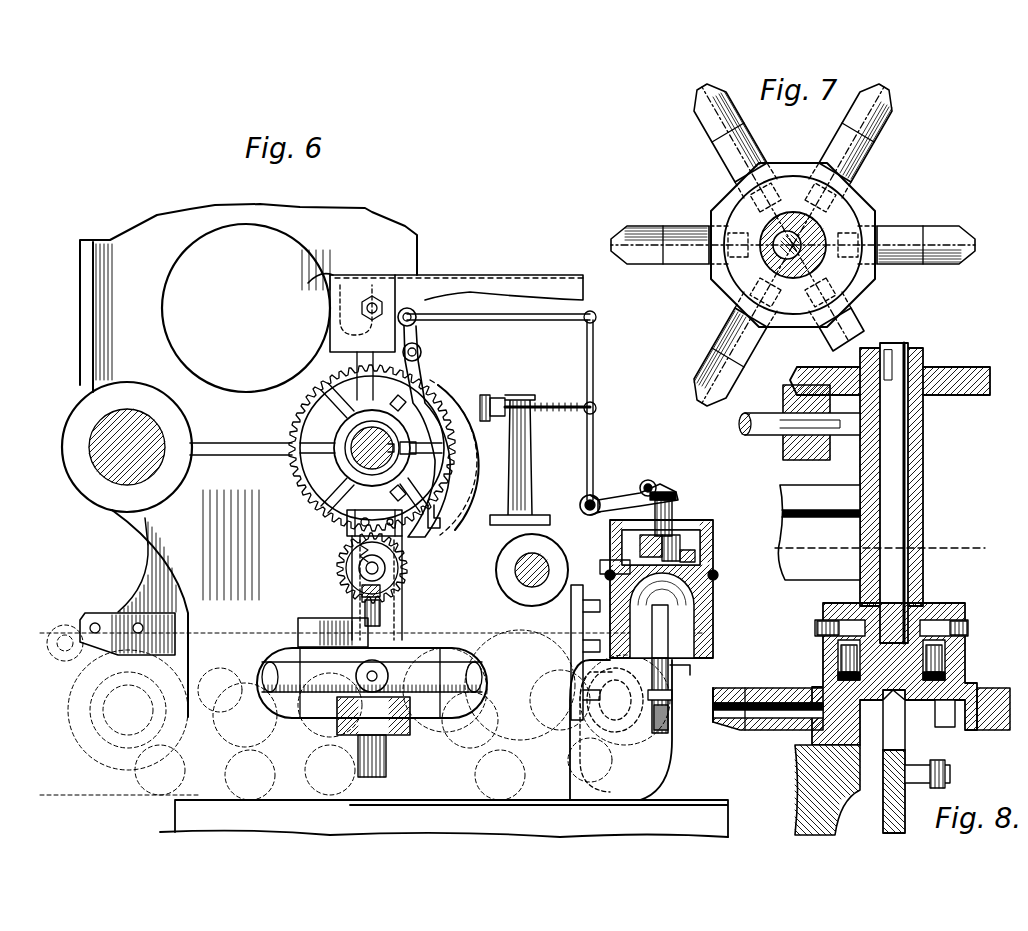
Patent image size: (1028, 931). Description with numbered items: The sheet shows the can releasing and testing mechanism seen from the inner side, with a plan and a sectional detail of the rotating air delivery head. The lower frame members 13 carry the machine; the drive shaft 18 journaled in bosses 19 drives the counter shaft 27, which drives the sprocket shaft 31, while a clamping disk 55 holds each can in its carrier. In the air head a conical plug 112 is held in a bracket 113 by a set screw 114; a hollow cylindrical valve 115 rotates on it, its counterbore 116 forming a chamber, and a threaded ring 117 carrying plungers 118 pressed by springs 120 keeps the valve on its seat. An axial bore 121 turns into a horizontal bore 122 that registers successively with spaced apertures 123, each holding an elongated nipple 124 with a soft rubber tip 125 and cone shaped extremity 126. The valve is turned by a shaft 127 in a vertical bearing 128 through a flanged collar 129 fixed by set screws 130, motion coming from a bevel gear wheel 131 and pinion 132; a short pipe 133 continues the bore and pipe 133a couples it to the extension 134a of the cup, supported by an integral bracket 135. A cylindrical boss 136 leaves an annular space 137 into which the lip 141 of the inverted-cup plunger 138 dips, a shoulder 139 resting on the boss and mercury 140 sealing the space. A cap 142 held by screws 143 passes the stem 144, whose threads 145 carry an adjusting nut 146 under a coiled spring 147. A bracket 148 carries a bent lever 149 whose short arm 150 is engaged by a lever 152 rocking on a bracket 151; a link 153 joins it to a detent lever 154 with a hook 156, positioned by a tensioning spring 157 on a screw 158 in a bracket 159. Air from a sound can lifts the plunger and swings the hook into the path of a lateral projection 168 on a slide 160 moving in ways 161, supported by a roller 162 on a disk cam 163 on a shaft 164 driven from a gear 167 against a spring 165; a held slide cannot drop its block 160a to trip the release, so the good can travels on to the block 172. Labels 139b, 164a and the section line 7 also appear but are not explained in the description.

In FIG. 6, the lower parallel frame members 13 is at (444, 818).
In FIG. 6, the drive shaft 18 is at (522, 566).
In FIG. 6, the bosses 19 is at (522, 590).
In FIG. 6, the counter shaft 27 is at (358, 446).
In FIG. 8, the counter shaft 27 is at (740, 422).
In FIG. 6, the sprocket shaft 31 is at (112, 478).
In FIG. 6, the disk 55 is at (412, 312).
In FIG. 8, the plug 112 is at (966, 684).
In FIG. 8, the bracket 113 is at (845, 792).
In FIG. 8, the set screw 114 is at (950, 774).
In FIG. 8, the hollow cylindrical valve 115 is at (948, 650).
In FIG. 8, the counterbore 116 is at (966, 628).
In FIG. 8, the collar or ring 117 is at (836, 650).
In FIG. 8, the plungers 118 is at (948, 664).
In FIG. 8, the springs 120 is at (838, 672).
In FIG. 8, the axial bore 121 is at (950, 712).
In FIG. 8, the horizontal bore 122 is at (884, 716).
In FIG. 8, the spaced apertures 123 is at (990, 732).
In FIG. 6, the elongated nipple 124 is at (330, 690).
In FIG. 7, the elongated nipple 124 is at (735, 158).
In FIG. 8, the elongated nipple 124 is at (800, 740).
In FIG. 6, the soft rubber tip 125 is at (292, 668).
In FIG. 7, the soft rubber tip 125 is at (708, 130).
In FIG. 8, the soft rubber tip 125 is at (762, 732).
In FIG. 6, the cone shaped extremity 126 is at (262, 672).
In FIG. 7, the cone shaped extremity 126 is at (700, 97).
In FIG. 8, the cone shaped extremity 126 is at (720, 732).
In FIG. 7, the shaft 127 is at (770, 266).
In FIG. 8, the shaft 127 is at (905, 493).
In FIG. 7, the vertical bearing 128 is at (815, 238).
In FIG. 8, the vertical bearing 128 is at (924, 432).
In FIG. 8, the flanged collar 129 is at (850, 604).
In FIG. 8, the set screws 130 is at (820, 624).
In FIG. 8, the bevel gear wheel 131 is at (950, 366).
In FIG. 8, the pinion 132 is at (783, 456).
In FIG. 6, the short pipe 133 is at (356, 745).
In FIG. 8, the short pipe 133 is at (893, 801).
In FIG. 6, the pipe 133a is at (655, 790).
In FIG. 6, the extension 134a is at (670, 680).
In FIG. 6, the integral bracket 135 is at (635, 676).
In FIG. 6, the cylindrical boss 136 is at (692, 668).
In FIG. 6, the annular space 137 is at (610, 600).
In FIG. 6, the plunger 138 is at (662, 615).
In FIG. 6, the shoulder 139 is at (690, 612).
In FIG. 6, the cam 139b is at (615, 700).
In FIG. 6, the mercury 140 is at (700, 642).
In FIG. 6, the lip 141 is at (603, 618).
In FIG. 6, the cap 142 is at (622, 548).
In FIG. 6, the screws 143 is at (716, 576).
In FIG. 6, the stem 144 is at (672, 510).
In FIG. 6, the threads 145 is at (690, 545).
In FIG. 6, the adjusting nut 146 is at (698, 558).
In FIG. 6, the coiled spring 147 is at (612, 566).
In FIG. 6, the bracket 148 is at (606, 520).
In FIG. 6, the bent lever 149 is at (594, 380).
In FIG. 6, the lower end 150 is at (600, 498).
In FIG. 6, the bracket 151 is at (676, 494).
In FIG. 6, the lever 152 is at (664, 474).
In FIG. 6, the link 153 is at (500, 320).
In FIG. 6, the detent lever 154 is at (452, 452).
In FIG. 6, the hook or tooth 156 is at (436, 530).
In FIG. 6, the tensioning spring 157 is at (565, 406).
In FIG. 6, the screw 158 is at (480, 404).
In FIG. 6, the bracket 159 is at (532, 452).
In FIG. 6, the slide 160 is at (358, 510).
In FIG. 6, the block 160a is at (300, 628).
In FIG. 6, the ways 161 is at (350, 532).
In FIG. 6, the roller 162 is at (358, 544).
In FIG. 6, the disk cam 163 is at (406, 566).
In FIG. 6, the shaft 164 is at (378, 570).
In FIG. 6, the pawl 164a is at (360, 580).
In FIG. 6, the spring 165 is at (362, 604).
In FIG. 6, the gear 167 is at (292, 418).
In FIG. 6, the lateral projection 168 is at (392, 508).
In FIG. 6, the block 172 is at (122, 648).
In FIG. 8, the section line 7 is at (871, 548).